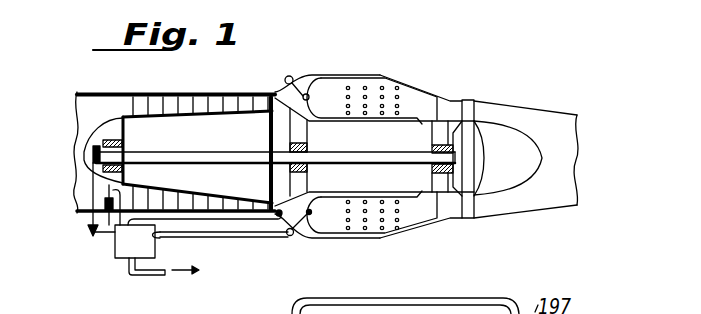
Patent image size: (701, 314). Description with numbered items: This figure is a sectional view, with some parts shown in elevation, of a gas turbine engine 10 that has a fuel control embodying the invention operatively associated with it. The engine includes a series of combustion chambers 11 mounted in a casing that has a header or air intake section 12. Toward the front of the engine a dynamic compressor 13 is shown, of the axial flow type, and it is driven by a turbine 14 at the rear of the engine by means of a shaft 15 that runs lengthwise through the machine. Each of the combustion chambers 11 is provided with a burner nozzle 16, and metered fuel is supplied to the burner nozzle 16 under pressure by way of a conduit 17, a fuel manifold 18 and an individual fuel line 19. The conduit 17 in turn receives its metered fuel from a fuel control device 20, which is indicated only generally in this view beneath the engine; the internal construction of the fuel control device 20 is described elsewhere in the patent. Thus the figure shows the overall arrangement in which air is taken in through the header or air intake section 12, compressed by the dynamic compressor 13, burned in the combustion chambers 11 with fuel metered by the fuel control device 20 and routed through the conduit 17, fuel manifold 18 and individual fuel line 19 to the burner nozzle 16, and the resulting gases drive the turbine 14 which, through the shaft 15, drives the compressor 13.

The gas turbine engine 10 is at (430, 100).
The combustion chambers 11 is at (337, 87).
The header or air intake section 12 is at (307, 83).
The dynamic compressor 13 is at (188, 115).
The turbine 14 is at (473, 162).
The shaft 15 is at (412, 160).
The burner nozzle 16 is at (312, 212).
The conduit 17 is at (225, 238).
The fuel manifold 18 is at (291, 236).
The individual fuel line 19 is at (296, 99).
The fuel control device 20 is at (116, 248).